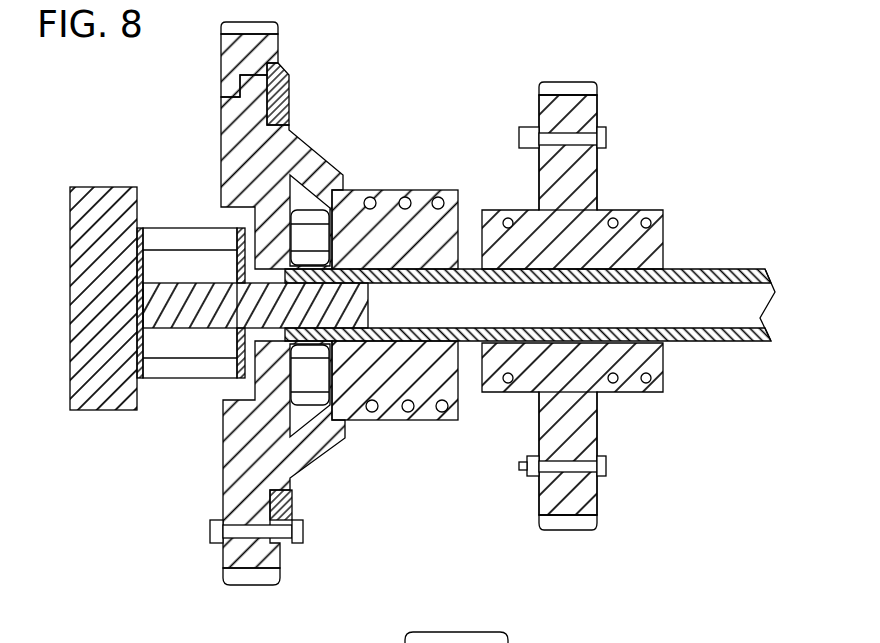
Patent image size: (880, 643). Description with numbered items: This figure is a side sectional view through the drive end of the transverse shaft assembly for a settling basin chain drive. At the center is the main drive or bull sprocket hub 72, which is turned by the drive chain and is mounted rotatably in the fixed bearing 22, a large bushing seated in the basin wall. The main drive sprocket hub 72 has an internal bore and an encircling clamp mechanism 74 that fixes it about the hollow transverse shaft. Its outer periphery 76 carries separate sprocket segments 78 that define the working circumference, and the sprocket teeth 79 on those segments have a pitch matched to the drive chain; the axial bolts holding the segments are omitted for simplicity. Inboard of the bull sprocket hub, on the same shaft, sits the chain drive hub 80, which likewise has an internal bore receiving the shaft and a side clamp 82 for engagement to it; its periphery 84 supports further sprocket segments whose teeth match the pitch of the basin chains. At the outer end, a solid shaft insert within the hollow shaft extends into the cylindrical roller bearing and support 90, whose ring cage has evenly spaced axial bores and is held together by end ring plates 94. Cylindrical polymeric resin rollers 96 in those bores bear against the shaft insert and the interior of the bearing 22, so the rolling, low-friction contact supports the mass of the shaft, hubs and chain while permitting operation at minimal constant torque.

The bearing 22 is at (72, 410).
The main drive sprocket hub 72 is at (345, 157).
The clamp mechanism 74 is at (438, 190).
The periphery 76 is at (218, 122).
The sprocket segments 78 is at (280, 90).
The sprocket teeth 79 is at (280, 573).
The chain drive hub 80 is at (621, 306).
The side clamp 82 is at (653, 210).
The periphery 84 is at (580, 198).
The cylindrical roller bearing and support 90 is at (127, 300).
The end ring plates 94 is at (187, 361).
The polymeric resin rollers 96 is at (160, 265).